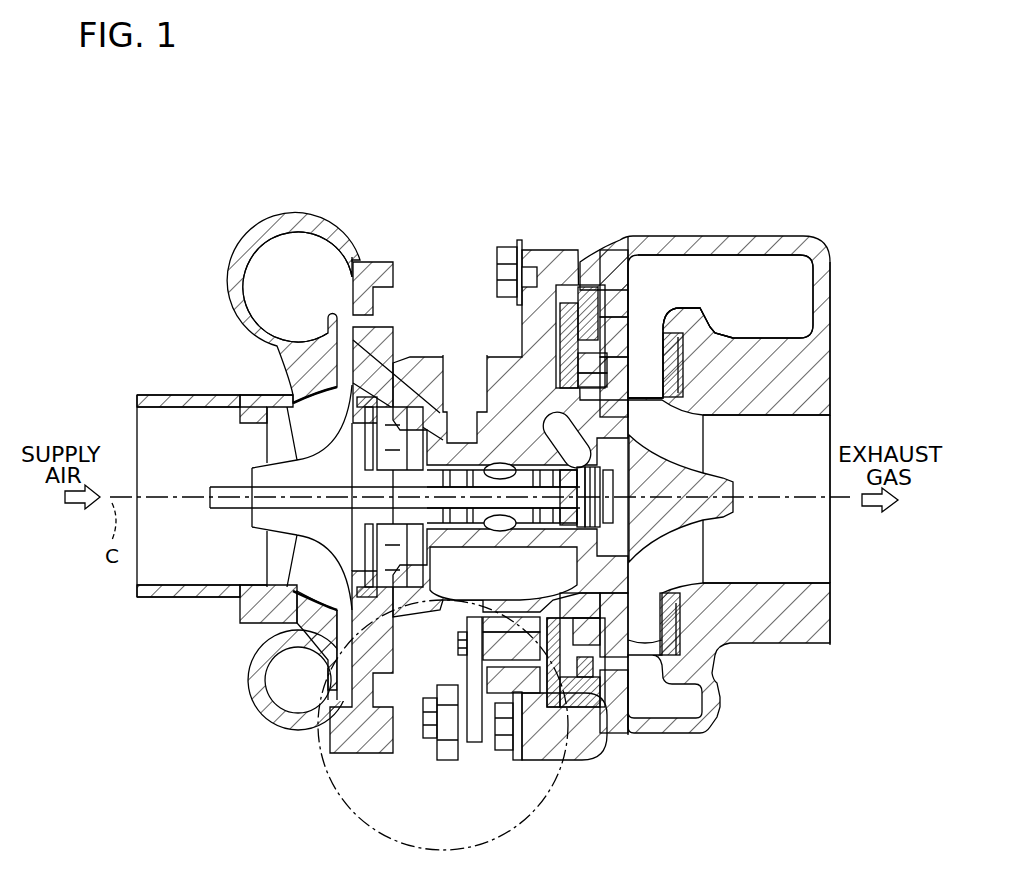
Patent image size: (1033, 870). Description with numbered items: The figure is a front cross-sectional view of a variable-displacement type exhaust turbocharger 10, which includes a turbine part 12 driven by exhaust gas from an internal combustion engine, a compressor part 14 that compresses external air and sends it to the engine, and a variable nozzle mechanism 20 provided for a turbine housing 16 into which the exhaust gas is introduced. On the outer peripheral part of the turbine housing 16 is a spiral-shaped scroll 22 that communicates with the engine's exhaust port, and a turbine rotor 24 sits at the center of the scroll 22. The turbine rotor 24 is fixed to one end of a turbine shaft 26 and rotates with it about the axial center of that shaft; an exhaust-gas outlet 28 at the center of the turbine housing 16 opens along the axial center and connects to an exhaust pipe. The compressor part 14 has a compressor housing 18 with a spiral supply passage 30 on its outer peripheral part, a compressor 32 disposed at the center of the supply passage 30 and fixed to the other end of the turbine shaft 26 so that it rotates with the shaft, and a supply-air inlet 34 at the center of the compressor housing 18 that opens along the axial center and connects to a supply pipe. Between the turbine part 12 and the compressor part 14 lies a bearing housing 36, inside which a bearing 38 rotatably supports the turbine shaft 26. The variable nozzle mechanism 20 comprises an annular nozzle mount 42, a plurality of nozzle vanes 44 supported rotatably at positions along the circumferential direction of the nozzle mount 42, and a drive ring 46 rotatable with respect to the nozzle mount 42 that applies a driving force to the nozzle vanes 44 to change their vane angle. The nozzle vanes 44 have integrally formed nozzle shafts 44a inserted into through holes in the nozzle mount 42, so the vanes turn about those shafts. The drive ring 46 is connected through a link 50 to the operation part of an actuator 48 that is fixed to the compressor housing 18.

The variable-displacement type exhaust turbocharger 10 is at (830, 196).
The turbine part 12 is at (838, 256).
The compressor part 14 is at (244, 228).
The turbine housing 16 is at (832, 348).
The compressor housing 18 is at (227, 275).
The variable nozzle mechanism 20 is at (589, 280).
The scroll 22 is at (790, 281).
The turbine rotor 24 is at (730, 520).
The turbine shaft 26 is at (452, 480).
The exhaust-gas outlet 28 is at (790, 414).
The supply passage 30 is at (258, 305).
The compressor 32 is at (297, 423).
The supply-air inlet 34 is at (150, 406).
The bearing housing 36 is at (428, 355).
The bearing 38 is at (462, 540).
The nozzle mount 42 is at (617, 318).
The nozzle vanes 44 is at (655, 340).
The nozzle shafts 44a is at (640, 372).
The drive ring 46 is at (575, 283).
The actuator 48 is at (342, 797).
The link 50 is at (473, 740).